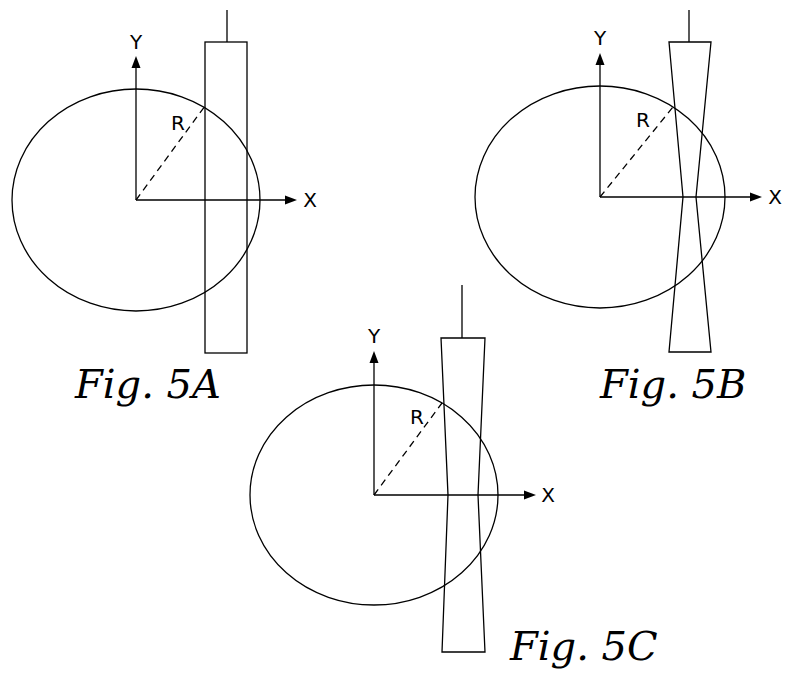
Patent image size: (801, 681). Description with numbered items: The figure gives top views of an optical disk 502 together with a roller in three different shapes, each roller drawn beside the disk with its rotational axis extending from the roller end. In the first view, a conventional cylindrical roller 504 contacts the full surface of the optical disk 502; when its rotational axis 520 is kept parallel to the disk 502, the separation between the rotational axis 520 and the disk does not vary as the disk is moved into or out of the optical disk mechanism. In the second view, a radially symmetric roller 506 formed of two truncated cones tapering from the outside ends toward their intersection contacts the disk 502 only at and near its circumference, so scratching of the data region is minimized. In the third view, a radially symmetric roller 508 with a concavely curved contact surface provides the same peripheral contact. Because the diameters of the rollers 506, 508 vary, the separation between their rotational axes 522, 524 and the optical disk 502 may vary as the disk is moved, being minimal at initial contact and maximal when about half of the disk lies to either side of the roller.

In FIG. 5A, the optical disk 502 is at (107, 261).
In FIG. 5B, the optical disk 502 is at (572, 259).
In FIG. 5C, the optical disk 502 is at (347, 557).
In FIG. 5A, the cylindrical roller 504 is at (240, 92).
In FIG. 5B, the roller with two truncated cones 506 is at (695, 92).
In FIG. 5C, the roller with concavely curved contact surface 508 is at (472, 390).
In FIG. 5A, the rotational axis 520 is at (227, 20).
In FIG. 5B, the rotational axis 522 is at (689, 20).
In FIG. 5C, the rotational axis 524 is at (462, 318).